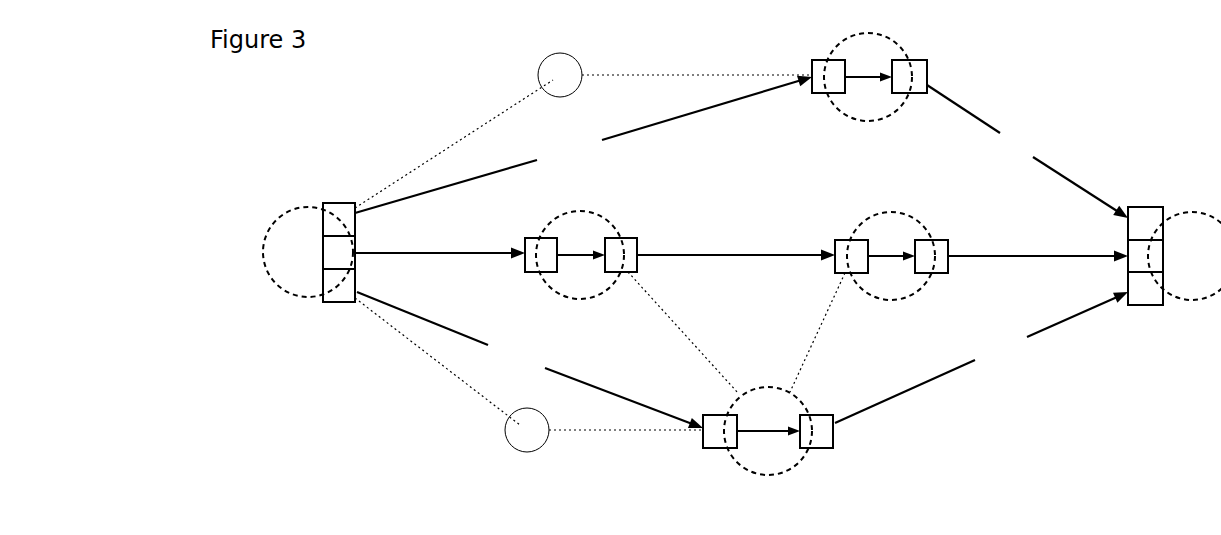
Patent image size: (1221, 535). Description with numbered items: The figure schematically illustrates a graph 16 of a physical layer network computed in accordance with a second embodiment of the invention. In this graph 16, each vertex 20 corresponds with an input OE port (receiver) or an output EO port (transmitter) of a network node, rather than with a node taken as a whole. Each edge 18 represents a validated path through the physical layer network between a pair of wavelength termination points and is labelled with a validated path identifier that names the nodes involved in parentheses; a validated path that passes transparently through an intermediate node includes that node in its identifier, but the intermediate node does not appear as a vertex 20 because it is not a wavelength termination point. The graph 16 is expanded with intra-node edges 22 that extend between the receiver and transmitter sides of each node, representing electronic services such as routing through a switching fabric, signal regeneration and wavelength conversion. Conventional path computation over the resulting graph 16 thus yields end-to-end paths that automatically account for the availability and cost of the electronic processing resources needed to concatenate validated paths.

The graph 16 is at (1133, 40).
The edge 18 is at (741, 252).
The vertex 20 is at (742, 255).
The intra-node edge 22 is at (736, 272).